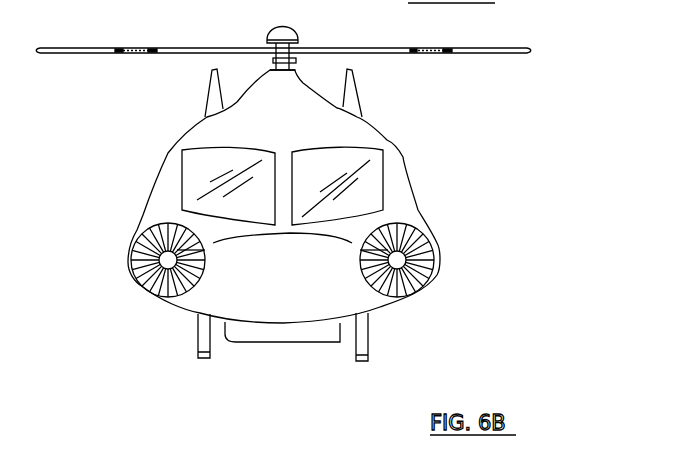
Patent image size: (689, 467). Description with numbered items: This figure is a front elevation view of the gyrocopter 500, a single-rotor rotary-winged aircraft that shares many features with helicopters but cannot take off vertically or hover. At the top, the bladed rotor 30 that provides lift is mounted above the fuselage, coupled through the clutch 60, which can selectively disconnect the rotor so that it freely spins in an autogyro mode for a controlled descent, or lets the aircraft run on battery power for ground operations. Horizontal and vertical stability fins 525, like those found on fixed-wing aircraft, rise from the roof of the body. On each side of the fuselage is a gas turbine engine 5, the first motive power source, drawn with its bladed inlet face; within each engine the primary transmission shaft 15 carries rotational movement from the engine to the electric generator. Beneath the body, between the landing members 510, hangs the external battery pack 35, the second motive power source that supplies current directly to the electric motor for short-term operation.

The gyrocopter 500 is at (362, 135).
The horizontal and vertical stability fins 525 is at (213, 96).
The clutch 60 is at (273, 60).
The bladed rotor 30 is at (274, 32).
The gas turbine engine 5 is at (153, 293).
The primary transmission shaft 15 is at (163, 225).
The skids 510 is at (200, 348).
The external battery pack 35 is at (265, 336).